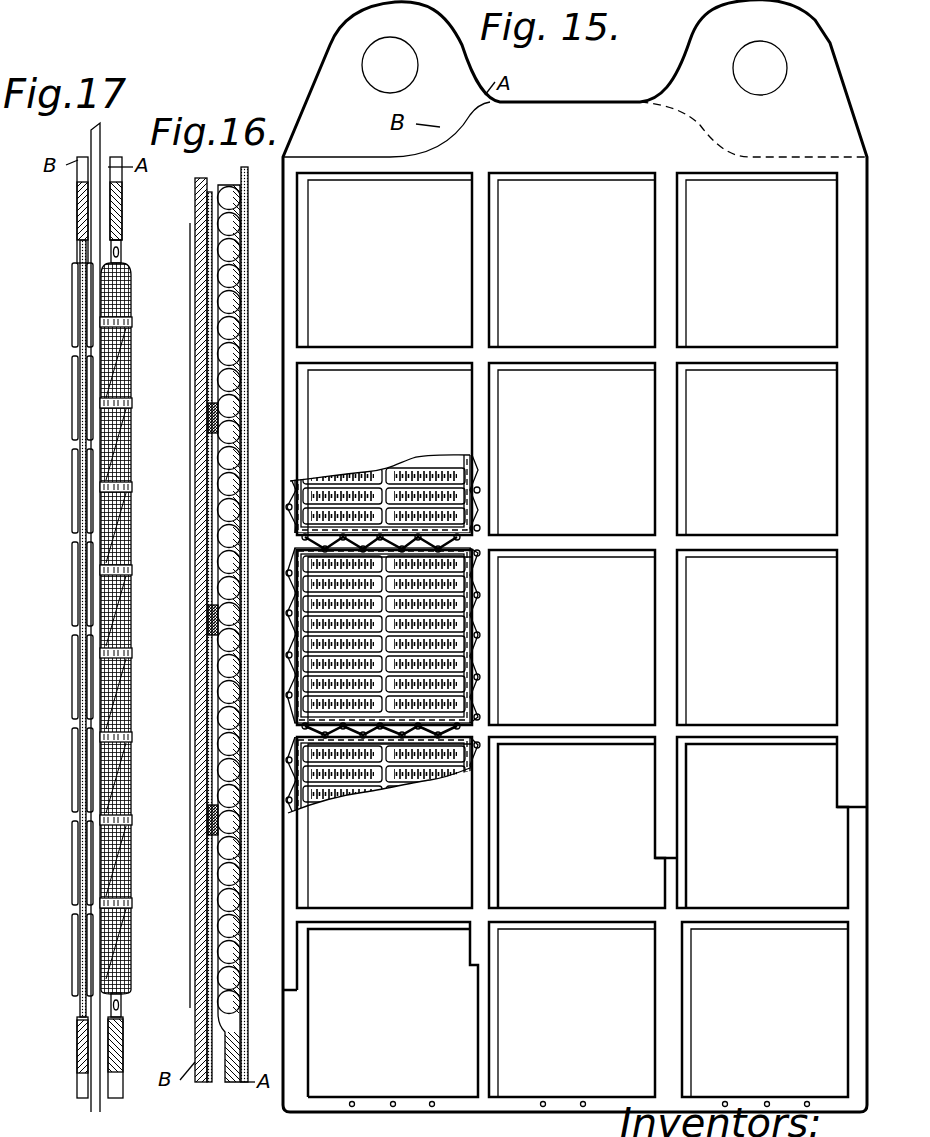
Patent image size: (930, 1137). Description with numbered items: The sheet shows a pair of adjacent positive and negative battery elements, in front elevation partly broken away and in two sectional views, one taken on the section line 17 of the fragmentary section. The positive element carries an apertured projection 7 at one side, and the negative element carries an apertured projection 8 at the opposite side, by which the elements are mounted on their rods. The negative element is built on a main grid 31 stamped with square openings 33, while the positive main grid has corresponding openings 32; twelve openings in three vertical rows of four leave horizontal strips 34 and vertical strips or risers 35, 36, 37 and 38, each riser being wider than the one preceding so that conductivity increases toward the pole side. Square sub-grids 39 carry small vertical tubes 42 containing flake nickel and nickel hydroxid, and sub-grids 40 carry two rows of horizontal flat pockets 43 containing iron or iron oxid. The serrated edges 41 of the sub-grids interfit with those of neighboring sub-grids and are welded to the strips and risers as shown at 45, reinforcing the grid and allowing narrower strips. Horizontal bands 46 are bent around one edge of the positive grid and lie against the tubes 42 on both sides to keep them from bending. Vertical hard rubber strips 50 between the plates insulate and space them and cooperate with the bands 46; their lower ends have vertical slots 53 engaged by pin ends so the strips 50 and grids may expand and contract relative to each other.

In FIG. 15, the apertured projection 7 is at (460, 78).
In FIG. 15, the apertured projection 8 is at (700, 46).
In FIG. 16, the section line 17— 17 is at (190, 1007).
In FIG. 15, the main grid 31 is at (575, 129).
In FIG. 15, the opening 32 is at (318, 252).
In FIG. 15, the opening 33 is at (468, 262).
In FIG. 15, the horizontal strip 34 is at (414, 172).
In FIG. 15, the vertical strip or riser 35 is at (295, 950).
In FIG. 15, the vertical strip or riser 36 is at (682, 447).
In FIG. 15, the vertical strip or riser 37 is at (495, 428).
In FIG. 15, the vertical strip or riser 38 is at (303, 442).
In FIG. 17, the sub-grid 39 is at (122, 243).
In FIG. 15, the sub-grid 40 is at (478, 590).
In FIG. 17, the sub-grid 40 is at (80, 262).
In FIG. 15, the serrated edge 41 is at (478, 648).
In FIG. 16, the tube 42 is at (232, 240).
In FIG. 17, the tube 42 is at (137, 538).
In FIG. 15, the flat pocket 43 is at (455, 565).
In FIG. 16, the flat pocket 43 is at (193, 706).
In FIG. 17, the flat pocket 43 is at (58, 950).
In FIG. 15, the weld 45 is at (478, 492).
In FIG. 17, the weld 45 is at (78, 212).
In FIG. 16, the strip or band 46 is at (246, 170).
In FIG. 17, the strip or band 46 is at (131, 470).
In FIG. 16, the hard rubber strip 50 is at (212, 417).
In FIG. 17, the hard rubber strip 50 is at (99, 140).
In FIG. 15, the vertical slot 53 is at (583, 1102).